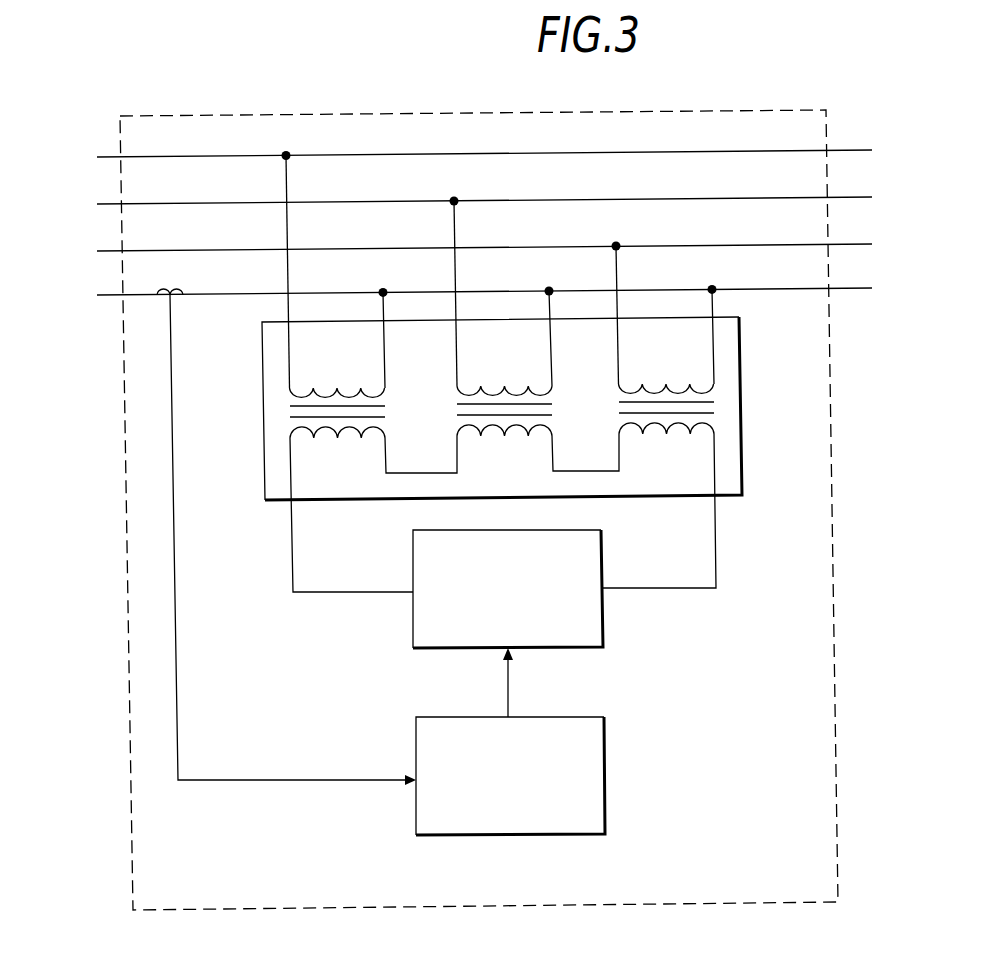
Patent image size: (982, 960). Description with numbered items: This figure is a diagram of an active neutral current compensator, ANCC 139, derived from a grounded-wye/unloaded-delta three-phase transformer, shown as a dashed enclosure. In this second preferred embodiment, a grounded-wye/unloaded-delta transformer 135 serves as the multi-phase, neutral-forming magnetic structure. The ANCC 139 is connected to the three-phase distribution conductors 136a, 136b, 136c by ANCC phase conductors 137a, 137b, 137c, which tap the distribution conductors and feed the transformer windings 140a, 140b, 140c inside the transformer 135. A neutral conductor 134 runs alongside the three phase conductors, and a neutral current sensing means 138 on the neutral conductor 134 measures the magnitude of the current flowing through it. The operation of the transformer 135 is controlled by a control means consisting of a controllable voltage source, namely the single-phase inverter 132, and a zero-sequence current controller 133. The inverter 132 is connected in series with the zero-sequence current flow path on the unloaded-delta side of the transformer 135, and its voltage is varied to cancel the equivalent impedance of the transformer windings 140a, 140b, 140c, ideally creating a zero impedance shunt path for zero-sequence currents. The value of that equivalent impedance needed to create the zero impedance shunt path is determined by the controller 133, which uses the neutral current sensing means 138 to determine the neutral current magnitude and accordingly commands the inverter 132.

The inverter 132 is at (601, 622).
The zero-sequence current controller 133 is at (604, 797).
The neutral conductor 134 is at (105, 297).
The grounded-wye/unloaded-delta transformer 135 is at (741, 447).
The three-phase distribution conductor 136a is at (98, 159).
The three-phase distribution conductor 136b is at (98, 206).
The three-phase distribution conductor 136c is at (98, 253).
The ANCC phase conductor 137a is at (287, 179).
The ANCC phase conductor 137b is at (456, 224).
The ANCC phase conductor 137c is at (618, 268).
The neutral current sensing means 138 is at (182, 297).
The ANCC 139 is at (290, 912).
The transformer winding 140a is at (385, 392).
The transformer winding 140b is at (552, 390).
The transformer winding 140c is at (714, 388).